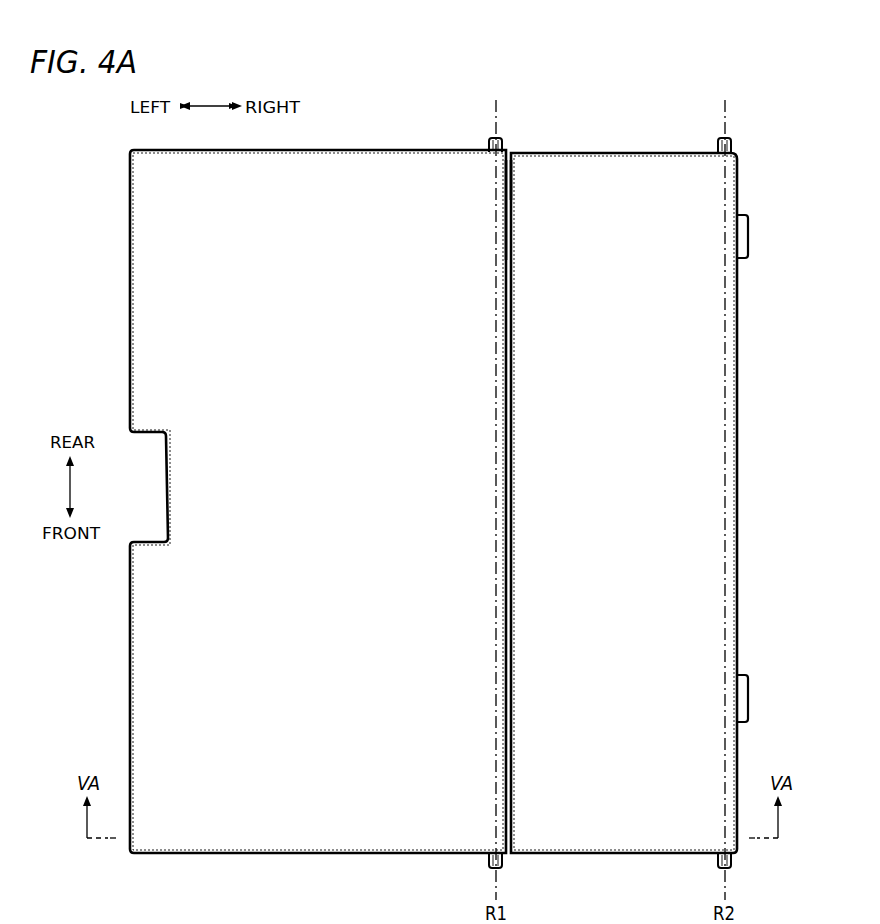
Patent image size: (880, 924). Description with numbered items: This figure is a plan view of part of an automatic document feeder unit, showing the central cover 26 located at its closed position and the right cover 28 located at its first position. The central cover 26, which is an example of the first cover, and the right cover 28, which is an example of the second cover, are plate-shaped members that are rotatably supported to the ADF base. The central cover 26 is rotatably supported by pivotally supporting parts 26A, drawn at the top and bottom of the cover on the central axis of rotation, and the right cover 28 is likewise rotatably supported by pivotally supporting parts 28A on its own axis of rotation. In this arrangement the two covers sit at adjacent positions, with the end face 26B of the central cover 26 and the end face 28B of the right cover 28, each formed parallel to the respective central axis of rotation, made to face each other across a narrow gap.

The central cover 26 is at (307, 835).
The right cover 28 is at (624, 835).
The pivotally supporting part 26A is at (489, 148).
The pivotally supporting part 28A is at (718, 148).
The end face 26B is at (512, 215).
The end face 28B is at (512, 180).